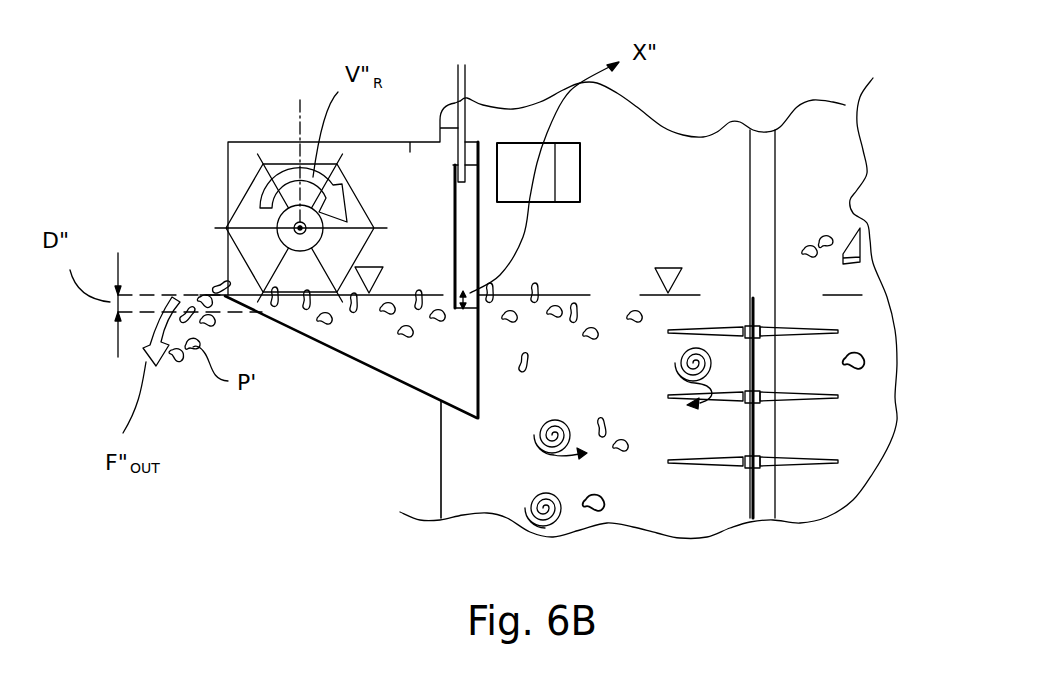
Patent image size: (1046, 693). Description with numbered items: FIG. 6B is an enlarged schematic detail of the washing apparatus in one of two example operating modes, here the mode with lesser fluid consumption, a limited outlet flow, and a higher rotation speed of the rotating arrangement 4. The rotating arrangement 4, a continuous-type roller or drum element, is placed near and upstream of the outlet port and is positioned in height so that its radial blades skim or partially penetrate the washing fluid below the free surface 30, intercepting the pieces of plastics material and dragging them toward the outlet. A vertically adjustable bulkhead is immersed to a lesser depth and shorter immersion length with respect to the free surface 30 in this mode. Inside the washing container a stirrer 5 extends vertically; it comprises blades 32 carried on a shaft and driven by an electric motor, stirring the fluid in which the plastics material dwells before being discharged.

The rotating arrangement 4 is at (363, 223).
The free surface 30 is at (672, 273).
The stirrer 5 is at (780, 331).
The blades 32 is at (820, 400).